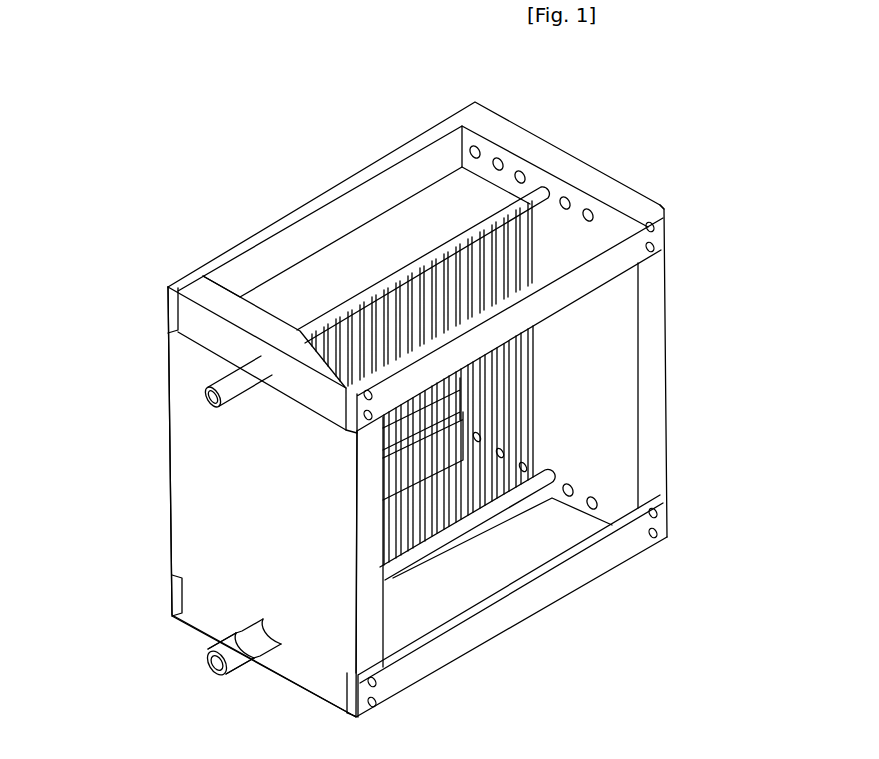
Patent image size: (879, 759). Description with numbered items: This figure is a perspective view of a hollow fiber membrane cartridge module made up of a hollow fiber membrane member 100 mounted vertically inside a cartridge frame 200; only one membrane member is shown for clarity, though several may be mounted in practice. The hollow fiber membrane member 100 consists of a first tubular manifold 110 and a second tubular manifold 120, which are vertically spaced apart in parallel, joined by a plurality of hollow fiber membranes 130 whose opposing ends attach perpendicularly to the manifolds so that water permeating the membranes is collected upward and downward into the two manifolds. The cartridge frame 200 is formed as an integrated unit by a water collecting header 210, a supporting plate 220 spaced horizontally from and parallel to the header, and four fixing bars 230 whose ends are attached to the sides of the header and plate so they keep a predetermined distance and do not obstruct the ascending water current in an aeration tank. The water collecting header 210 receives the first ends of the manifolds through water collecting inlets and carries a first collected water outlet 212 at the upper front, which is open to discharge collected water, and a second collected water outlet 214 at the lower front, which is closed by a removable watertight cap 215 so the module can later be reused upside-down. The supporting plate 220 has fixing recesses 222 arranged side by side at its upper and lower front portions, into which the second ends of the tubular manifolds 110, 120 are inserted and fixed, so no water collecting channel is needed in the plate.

The hollow fiber membrane member 100 is at (358, 291).
The first tubular manifold 110 is at (418, 268).
The second tubular manifold 120 is at (424, 556).
The hollow fiber membranes 130 is at (537, 430).
The cartridge frame 200 is at (592, 167).
The water collecting header 210 is at (205, 502).
The first collected water outlet 212 is at (220, 386).
The second collected water outlet 214 is at (258, 648).
The watertight cap 215 is at (232, 663).
The supporting plate 220 is at (617, 343).
The fixing recesses 222 is at (520, 177).
The fixing bars 230 is at (218, 260).